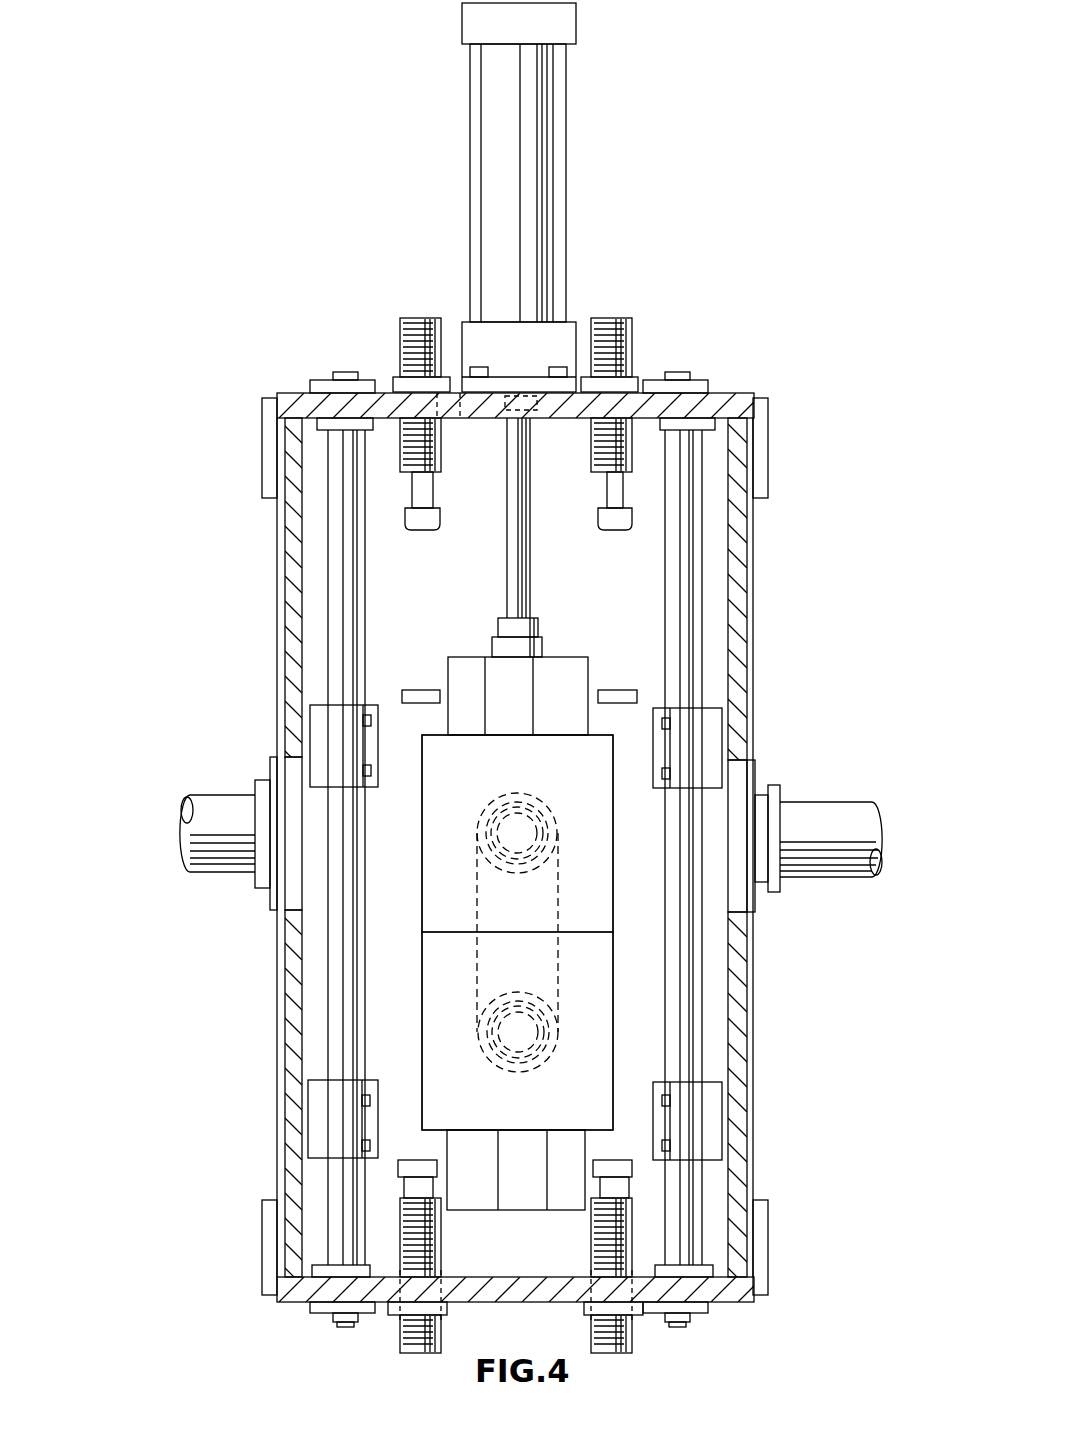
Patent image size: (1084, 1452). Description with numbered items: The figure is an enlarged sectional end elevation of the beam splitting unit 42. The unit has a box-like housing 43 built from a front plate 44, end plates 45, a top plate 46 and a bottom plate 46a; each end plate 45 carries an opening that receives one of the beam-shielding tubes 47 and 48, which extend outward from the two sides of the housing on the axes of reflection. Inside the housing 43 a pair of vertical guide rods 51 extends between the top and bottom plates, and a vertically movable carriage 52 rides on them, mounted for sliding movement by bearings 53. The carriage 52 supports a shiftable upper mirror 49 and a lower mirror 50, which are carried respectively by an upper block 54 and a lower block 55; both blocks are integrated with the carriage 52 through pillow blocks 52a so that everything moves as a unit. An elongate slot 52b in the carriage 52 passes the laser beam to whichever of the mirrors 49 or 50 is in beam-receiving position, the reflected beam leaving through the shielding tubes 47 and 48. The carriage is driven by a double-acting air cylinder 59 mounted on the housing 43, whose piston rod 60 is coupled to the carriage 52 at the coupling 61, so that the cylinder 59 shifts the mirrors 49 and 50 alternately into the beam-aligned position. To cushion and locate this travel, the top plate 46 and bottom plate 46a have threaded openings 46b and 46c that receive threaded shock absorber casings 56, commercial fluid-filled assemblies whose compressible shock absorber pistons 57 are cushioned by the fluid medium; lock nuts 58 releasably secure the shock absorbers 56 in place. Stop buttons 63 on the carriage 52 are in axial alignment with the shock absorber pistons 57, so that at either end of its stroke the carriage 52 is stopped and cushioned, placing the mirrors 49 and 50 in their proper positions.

The beam splitting unit 42 is at (577, 1022).
The box-like housing 43 is at (771, 528).
The front plate 44 is at (551, 1249).
The end plates 45 is at (297, 956).
The top plate 46 is at (571, 412).
The bottom plate 46a is at (526, 1297).
The threaded opening 46b is at (462, 420).
The threaded opening 46c is at (440, 1290).
The beam-shielding tube 47 is at (222, 805).
The beam-shielding tube 48 is at (818, 818).
The upper mirror 49 is at (545, 828).
The lower mirror 50 is at (492, 1042).
The vertical guide rods 51 is at (345, 633).
The carriage 52 is at (378, 1037).
The pillow blocks 52a is at (570, 680).
The elongate slot 52b is at (470, 964).
The bearings 53 is at (320, 728).
The upper block 54 is at (598, 868).
The lower block 55 is at (590, 1000).
The shock absorber casings 56 is at (425, 318).
The shock absorber pistons 57 is at (433, 492).
The lock nuts 58 is at (393, 372).
The double-acting air cylinder 59 is at (547, 186).
The piston rod 60 is at (530, 490).
The coupling 61 is at (540, 648).
The stop buttons 63 is at (437, 530).